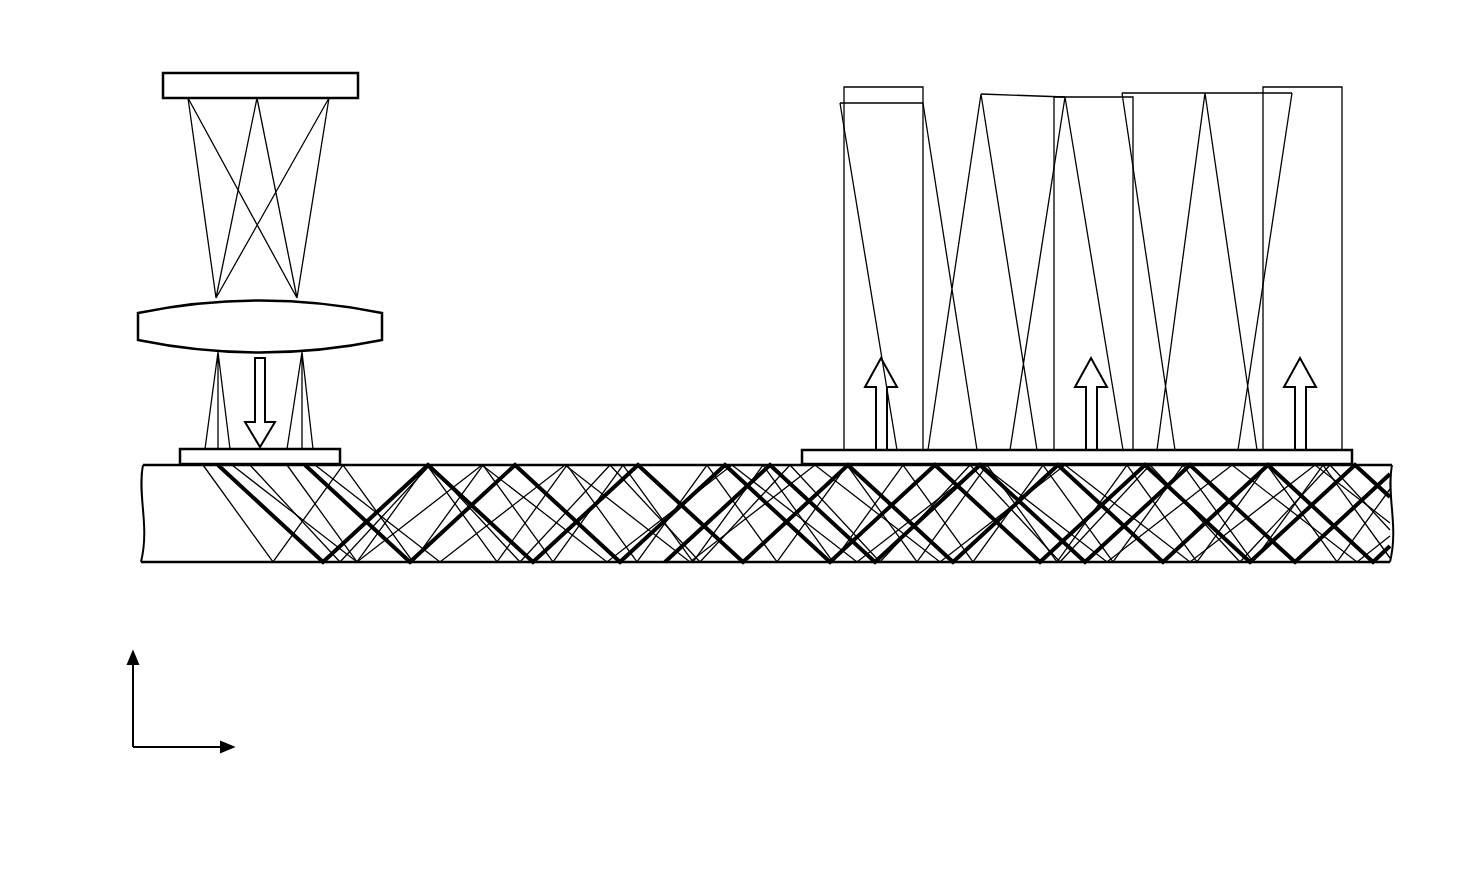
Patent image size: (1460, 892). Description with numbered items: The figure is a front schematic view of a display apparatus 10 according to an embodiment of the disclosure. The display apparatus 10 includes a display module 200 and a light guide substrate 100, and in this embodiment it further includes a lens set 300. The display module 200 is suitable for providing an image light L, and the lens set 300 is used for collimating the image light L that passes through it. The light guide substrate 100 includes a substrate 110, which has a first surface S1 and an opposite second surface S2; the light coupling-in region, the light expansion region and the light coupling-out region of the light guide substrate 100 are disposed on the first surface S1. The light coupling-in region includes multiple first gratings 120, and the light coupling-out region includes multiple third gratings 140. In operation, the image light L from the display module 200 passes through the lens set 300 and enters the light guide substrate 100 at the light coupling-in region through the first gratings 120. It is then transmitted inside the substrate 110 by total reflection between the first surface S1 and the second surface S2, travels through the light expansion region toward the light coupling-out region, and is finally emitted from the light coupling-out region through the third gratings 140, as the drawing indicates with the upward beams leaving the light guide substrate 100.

The display apparatus 10 is at (1392, 643).
The light guide substrate 100 is at (1424, 505).
The substrate 110 is at (162, 515).
The first gratings 120 is at (328, 458).
The third gratings 140 is at (822, 457).
The display module 200 is at (343, 87).
The lens set 300 is at (368, 329).
The image light L is at (307, 197).
The first surface S1 is at (597, 455).
The second surface S2 is at (597, 572).